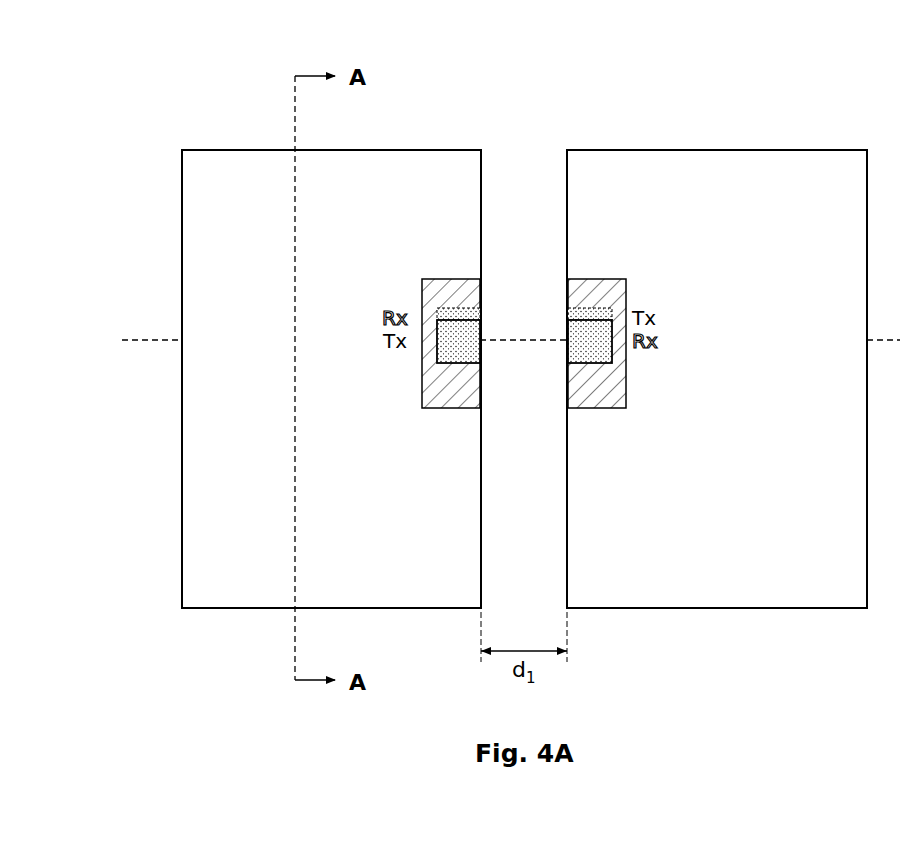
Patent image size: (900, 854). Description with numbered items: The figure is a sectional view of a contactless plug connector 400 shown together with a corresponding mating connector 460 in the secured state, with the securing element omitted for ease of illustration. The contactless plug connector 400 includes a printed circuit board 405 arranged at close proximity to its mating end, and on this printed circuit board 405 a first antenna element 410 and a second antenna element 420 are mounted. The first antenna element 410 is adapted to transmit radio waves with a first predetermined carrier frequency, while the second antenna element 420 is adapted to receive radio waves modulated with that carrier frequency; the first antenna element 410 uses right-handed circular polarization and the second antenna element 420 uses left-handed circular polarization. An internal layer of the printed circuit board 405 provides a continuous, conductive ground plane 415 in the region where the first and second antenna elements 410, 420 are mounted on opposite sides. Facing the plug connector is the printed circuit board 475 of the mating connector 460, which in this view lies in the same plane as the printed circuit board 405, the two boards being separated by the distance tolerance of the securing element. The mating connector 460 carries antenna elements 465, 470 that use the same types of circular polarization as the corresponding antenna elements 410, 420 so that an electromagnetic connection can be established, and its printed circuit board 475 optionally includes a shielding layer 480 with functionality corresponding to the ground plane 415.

The contactless plug connector 400 is at (386, 150).
The printed circuit board 405 is at (454, 165).
The first antenna element 410 is at (478, 333).
The ground plane 415 is at (454, 395).
The second antenna element 420 is at (484, 312).
The mating connector 460 is at (706, 150).
The antenna element of the mating connector 465 is at (582, 346).
The antenna element of the mating connector 470 is at (588, 303).
The printed circuit board of the mating connector 475 is at (814, 165).
The shielding layer 480 is at (614, 395).